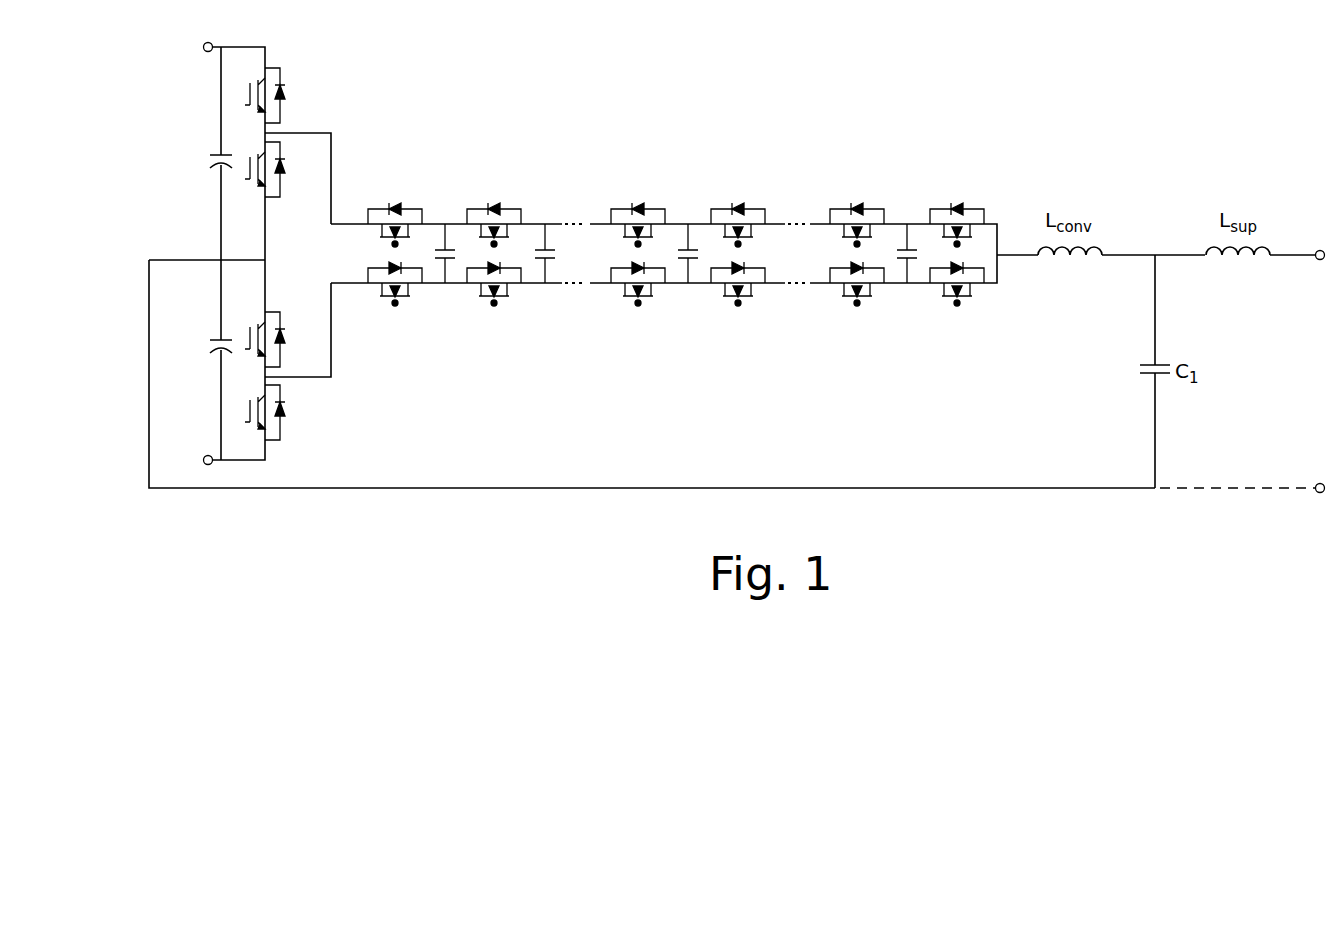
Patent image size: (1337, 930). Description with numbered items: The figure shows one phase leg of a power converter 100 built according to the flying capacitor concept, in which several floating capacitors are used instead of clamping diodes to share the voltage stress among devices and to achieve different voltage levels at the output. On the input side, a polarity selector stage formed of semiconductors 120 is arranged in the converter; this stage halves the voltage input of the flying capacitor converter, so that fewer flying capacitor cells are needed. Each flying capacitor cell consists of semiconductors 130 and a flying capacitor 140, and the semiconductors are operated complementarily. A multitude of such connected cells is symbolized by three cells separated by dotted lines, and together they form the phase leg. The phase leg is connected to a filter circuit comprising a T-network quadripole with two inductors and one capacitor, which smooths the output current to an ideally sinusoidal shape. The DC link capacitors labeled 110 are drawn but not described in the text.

The power converter 100 is at (632, 374).
The DC link capacitor 110 is at (203, 253).
The semiconductors 120 is at (285, 255).
The semiconductors 130 is at (676, 257).
The capacitor (flying capacitor) 140 is at (659, 253).